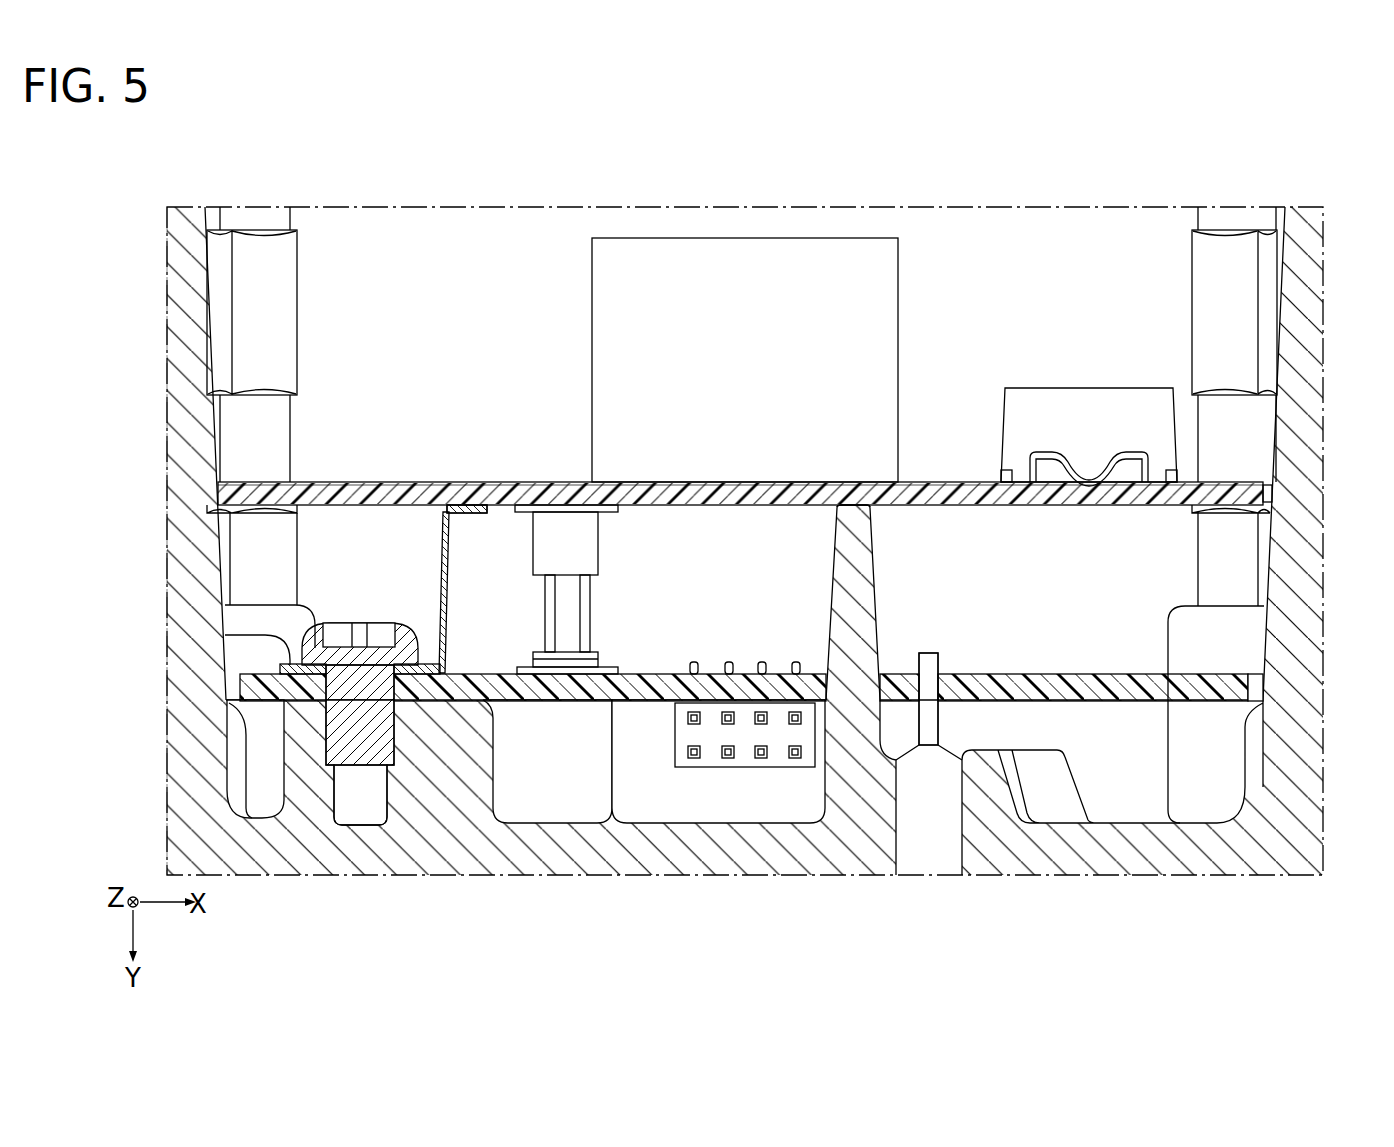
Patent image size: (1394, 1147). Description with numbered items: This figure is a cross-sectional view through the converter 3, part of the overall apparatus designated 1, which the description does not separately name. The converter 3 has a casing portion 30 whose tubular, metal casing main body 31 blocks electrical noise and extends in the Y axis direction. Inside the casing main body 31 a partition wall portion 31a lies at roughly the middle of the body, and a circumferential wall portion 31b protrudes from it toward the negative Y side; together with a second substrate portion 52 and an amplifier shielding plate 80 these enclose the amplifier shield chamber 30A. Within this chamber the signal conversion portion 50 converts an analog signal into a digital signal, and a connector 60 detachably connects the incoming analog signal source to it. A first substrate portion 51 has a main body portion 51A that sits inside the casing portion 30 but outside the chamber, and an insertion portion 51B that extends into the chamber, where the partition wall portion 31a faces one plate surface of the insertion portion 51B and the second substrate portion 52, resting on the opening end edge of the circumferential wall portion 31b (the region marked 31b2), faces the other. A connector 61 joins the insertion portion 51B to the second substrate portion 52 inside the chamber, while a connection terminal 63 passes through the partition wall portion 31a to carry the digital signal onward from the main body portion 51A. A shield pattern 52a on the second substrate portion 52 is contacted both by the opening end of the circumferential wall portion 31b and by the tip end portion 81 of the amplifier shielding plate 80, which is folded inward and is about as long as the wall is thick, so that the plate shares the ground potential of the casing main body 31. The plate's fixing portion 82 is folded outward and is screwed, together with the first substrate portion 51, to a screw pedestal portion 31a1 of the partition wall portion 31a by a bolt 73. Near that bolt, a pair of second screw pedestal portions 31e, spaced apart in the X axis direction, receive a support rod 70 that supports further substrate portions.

The electronic device 1 is at (290, 162).
The converter 3 is at (357, 186).
The casing portion 30 is at (624, 193).
The amplifier shield chamber 30A is at (641, 562).
The casing main body 31 is at (743, 592).
The partition wall portion 31a is at (745, 592).
The screw pedestal portion 31a1 is at (487, 705).
The circumferential wall portion 31b is at (862, 568).
The top face of partition wall 31b2 is at (862, 516).
The second screw pedestal portions 31e is at (245, 583).
The signal conversion portion 50 is at (745, 827).
The connector 60 is at (748, 768).
The first substrate portion 51 is at (794, 632).
The main body portion 51A is at (905, 652).
The insertion portion 51B is at (650, 673).
The second substrate portion 52 is at (560, 505).
The shield pattern 52a is at (450, 520).
The connector 61 is at (533, 553).
The connection terminal 63 is at (985, 822).
The support rod 70 is at (300, 318).
The bolt 73 is at (330, 622).
The amplifier shielding plate 80 is at (440, 582).
The tip end portion 81 is at (463, 515).
The fixing portion 82 is at (265, 638).